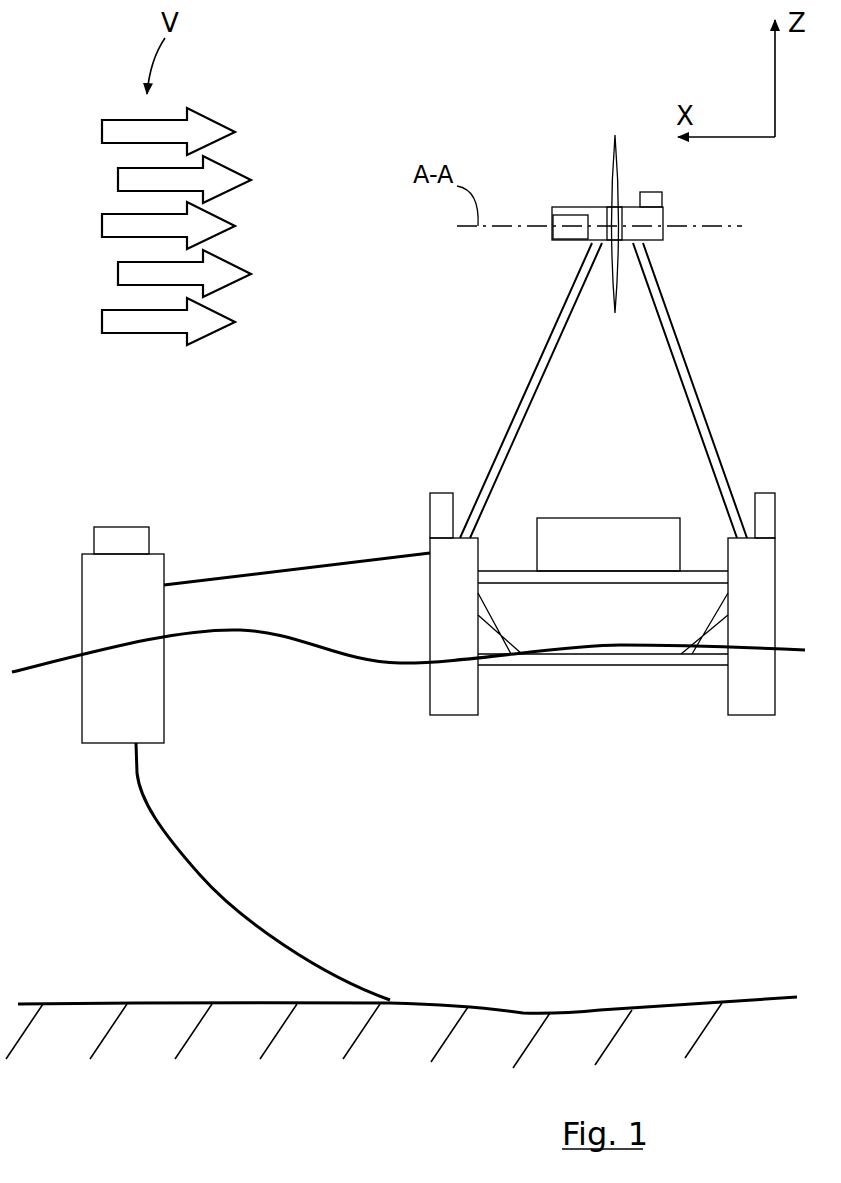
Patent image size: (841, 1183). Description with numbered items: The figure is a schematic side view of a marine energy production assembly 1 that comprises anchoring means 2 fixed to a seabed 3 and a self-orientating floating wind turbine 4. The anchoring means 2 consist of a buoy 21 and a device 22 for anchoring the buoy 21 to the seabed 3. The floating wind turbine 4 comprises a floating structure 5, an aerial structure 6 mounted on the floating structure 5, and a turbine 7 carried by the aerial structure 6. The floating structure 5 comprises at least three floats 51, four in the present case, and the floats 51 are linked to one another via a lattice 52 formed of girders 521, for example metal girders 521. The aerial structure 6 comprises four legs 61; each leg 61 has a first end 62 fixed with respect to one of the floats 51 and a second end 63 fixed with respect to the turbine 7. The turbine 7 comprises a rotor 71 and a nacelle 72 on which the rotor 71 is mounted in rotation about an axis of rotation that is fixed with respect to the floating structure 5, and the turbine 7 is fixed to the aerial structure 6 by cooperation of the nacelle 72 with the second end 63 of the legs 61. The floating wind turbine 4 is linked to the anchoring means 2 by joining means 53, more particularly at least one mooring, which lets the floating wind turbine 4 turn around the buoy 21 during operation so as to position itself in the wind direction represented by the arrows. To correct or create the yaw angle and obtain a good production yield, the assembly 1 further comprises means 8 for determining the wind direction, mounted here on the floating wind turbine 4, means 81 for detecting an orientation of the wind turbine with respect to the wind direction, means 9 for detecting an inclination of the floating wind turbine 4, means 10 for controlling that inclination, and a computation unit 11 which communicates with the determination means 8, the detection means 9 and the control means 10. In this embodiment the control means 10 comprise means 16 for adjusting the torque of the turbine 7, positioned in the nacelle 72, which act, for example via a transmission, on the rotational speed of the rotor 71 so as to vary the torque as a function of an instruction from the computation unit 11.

The marine energy production assembly 1 is at (366, 143).
The anchoring means 2 is at (68, 575).
The seabed 3 is at (577, 1033).
The self-orientating floating wind turbine 4 is at (388, 317).
The floating structure 5 is at (802, 612).
The aerial structure 6 is at (789, 365).
The turbine 7 is at (546, 163).
The means for determining the wind direction 8 is at (650, 192).
The means for detecting an inclination 9 is at (440, 510).
The means for controlling the inclination 10 is at (583, 508).
The computation unit 11 is at (762, 520).
The means for adjusting the torque of the turbine 16 is at (550, 228).
The buoy 21 is at (147, 714).
The device for anchoring the buoy 22 is at (230, 876).
The floats 51 is at (443, 702).
The lattice 52 is at (600, 689).
The joining means 53 is at (256, 558).
The legs 61 is at (530, 396).
The first end 62 is at (470, 535).
The second end 63 is at (592, 247).
The rotor 71 is at (613, 168).
The nacelle 72 is at (652, 223).
The means for detecting an orientation of the wind turbine 81 is at (120, 545).
The girders 521 is at (500, 620).